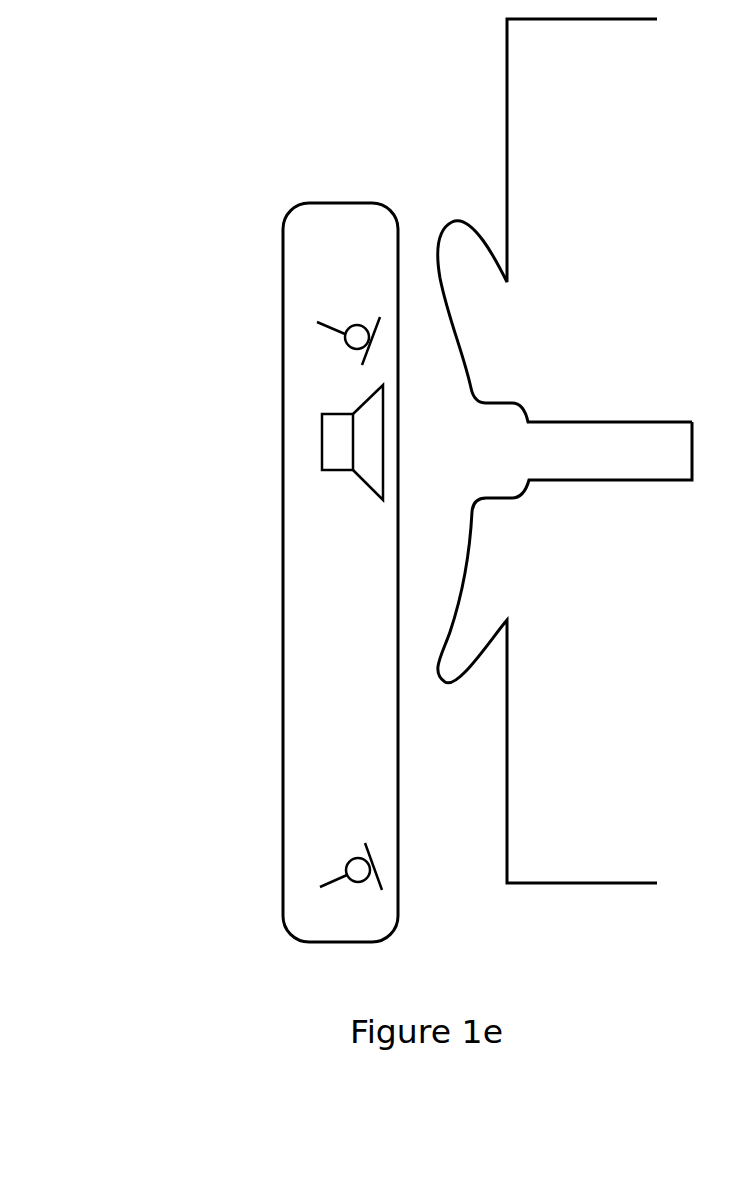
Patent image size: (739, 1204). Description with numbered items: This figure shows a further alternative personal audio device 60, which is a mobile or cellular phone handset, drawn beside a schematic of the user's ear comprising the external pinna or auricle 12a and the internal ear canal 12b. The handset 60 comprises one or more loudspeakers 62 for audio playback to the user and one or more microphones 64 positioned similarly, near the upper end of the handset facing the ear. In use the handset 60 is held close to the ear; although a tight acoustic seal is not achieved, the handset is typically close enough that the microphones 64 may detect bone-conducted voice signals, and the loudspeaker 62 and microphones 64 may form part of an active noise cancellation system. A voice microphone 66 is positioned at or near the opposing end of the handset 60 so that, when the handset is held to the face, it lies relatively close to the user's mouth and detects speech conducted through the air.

The personal audio device 60 is at (170, 306).
The loudspeaker 62 is at (356, 484).
The microphone 64 is at (357, 320).
The voice microphone 66 is at (360, 888).
The pinna 12a is at (472, 262).
The ear canal 12b is at (645, 462).